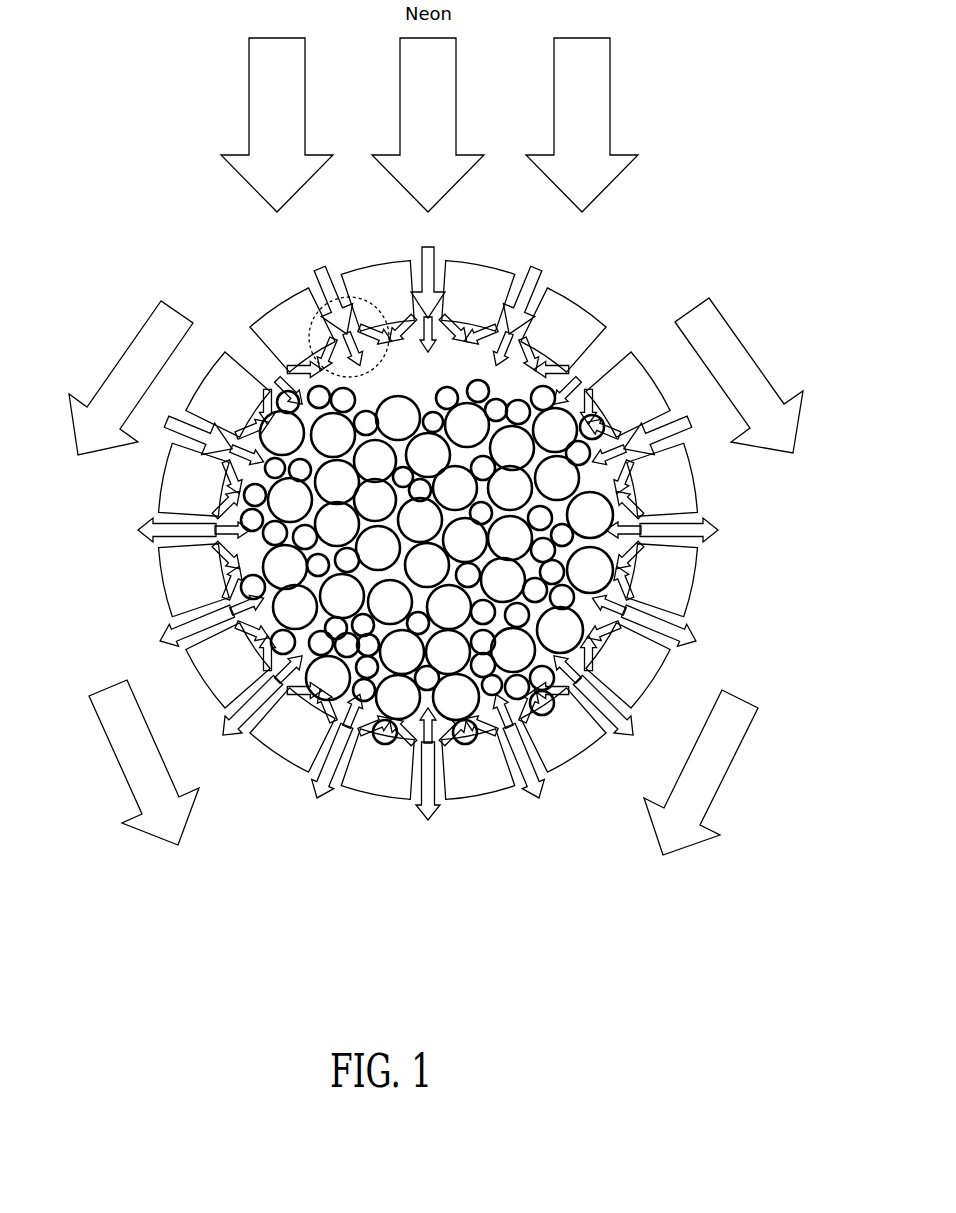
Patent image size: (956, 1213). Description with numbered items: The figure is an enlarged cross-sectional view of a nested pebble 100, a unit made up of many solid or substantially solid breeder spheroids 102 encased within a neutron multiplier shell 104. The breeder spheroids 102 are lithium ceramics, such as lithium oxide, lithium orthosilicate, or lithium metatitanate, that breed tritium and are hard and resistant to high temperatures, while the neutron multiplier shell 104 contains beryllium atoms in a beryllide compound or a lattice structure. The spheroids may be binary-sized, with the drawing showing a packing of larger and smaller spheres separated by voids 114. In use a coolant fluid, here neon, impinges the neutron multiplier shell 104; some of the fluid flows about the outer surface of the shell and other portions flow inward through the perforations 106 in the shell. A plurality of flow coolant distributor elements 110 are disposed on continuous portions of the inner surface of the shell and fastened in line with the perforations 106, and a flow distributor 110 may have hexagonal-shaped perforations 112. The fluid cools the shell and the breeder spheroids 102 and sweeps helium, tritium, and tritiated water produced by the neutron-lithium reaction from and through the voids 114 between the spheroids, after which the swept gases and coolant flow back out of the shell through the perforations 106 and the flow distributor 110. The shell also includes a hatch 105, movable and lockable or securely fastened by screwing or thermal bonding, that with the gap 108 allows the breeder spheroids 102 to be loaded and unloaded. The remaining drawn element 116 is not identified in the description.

The nested pebble 100 is at (714, 196).
The breeder spheroids 102 is at (425, 398).
The neutron multiplier shell 104 is at (678, 596).
The hatch 105 is at (567, 312).
The perforations 106 is at (547, 272).
The gap 108 is at (600, 357).
The flow coolant distributor elements 110 is at (310, 306).
The hexagonal-shaped perforations 112 is at (285, 316).
The voids 114 is at (305, 362).
The inner flow dispersion arrows 116 is at (512, 370).